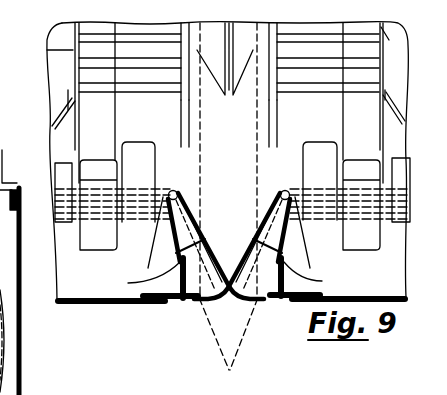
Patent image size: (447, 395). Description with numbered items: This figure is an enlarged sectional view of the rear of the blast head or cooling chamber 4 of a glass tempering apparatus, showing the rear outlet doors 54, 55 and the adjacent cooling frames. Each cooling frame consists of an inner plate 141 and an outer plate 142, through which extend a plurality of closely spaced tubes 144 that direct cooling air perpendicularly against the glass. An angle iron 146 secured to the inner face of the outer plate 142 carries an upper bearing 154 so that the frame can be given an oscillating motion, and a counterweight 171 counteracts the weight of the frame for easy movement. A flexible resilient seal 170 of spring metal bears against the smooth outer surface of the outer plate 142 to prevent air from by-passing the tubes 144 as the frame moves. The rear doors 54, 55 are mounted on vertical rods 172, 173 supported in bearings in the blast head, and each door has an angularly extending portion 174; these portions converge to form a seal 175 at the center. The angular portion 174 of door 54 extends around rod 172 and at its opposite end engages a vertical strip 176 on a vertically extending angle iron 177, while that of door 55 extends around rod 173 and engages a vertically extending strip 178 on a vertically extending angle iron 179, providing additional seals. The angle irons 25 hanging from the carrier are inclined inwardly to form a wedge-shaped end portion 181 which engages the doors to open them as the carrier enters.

The blast head or cooling chamber 4 is at (378, 394).
The angle irons 25 is at (212, 28).
The outlet door 54 is at (184, 321).
The outlet door 55 is at (274, 318).
The inner plate 141 is at (180, 148).
The outer plate 142 is at (47, 50).
The tubes 144 is at (150, 55).
The angle iron 146 is at (97, 143).
The upper bearing 154 is at (97, 232).
The flexible resilient seal 170 is at (57, 123).
The counterweight 171 is at (126, 147).
The vertical rod 172 is at (174, 190).
The vertical rod 173 is at (284, 190).
The angularly extending portion 174 is at (245, 256).
The seal 175 is at (232, 293).
The vertical strip 176 is at (147, 292).
The vertically extending angle iron 177 is at (138, 304).
The vertically extending strip 178 is at (300, 282).
The vertically extending angle iron 179 is at (348, 285).
The wedge-shaped end portion 181 is at (232, 97).